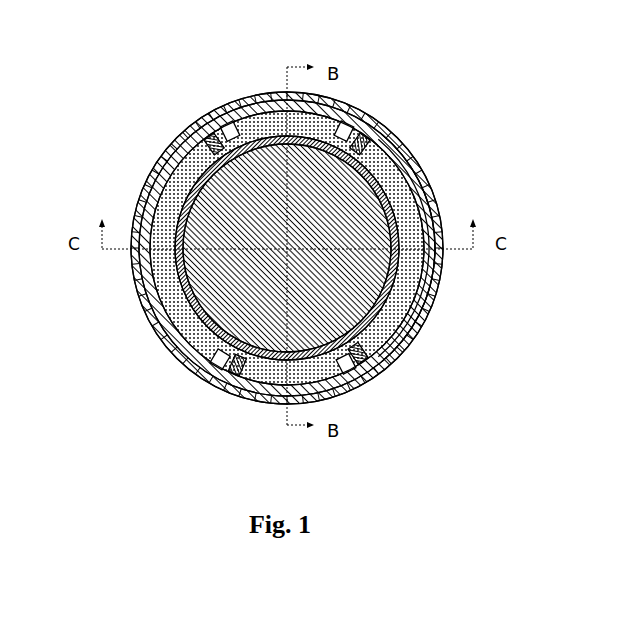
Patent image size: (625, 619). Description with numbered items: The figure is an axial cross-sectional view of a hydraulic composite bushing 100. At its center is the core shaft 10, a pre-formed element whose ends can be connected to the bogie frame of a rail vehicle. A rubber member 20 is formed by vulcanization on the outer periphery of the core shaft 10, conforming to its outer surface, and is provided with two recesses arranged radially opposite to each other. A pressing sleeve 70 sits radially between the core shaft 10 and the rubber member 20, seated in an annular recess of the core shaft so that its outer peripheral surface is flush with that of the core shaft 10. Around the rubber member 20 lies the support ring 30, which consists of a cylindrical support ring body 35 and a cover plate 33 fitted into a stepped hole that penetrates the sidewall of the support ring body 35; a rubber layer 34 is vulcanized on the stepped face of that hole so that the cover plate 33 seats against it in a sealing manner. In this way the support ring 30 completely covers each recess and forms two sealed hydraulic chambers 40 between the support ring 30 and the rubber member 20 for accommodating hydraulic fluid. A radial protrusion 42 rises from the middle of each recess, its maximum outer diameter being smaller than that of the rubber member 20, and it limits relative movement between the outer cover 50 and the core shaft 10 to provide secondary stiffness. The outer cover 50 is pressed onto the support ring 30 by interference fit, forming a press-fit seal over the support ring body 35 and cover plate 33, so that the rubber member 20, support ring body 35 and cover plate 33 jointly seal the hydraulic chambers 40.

The hydraulic composite bushing 100 is at (86, 45).
The core shaft 10 is at (158, 338).
The rubber member 20 is at (172, 148).
The support ring 30 is at (403, 145).
The cover plate 33 is at (267, 95).
The rubber layer 34 is at (368, 365).
The support ring body 35 is at (432, 195).
The hydraulic chamber 40 is at (235, 108).
The radial protrusion 42 is at (342, 102).
The outer cover 50 is at (442, 317).
The pressing sleeve 70 is at (208, 360).